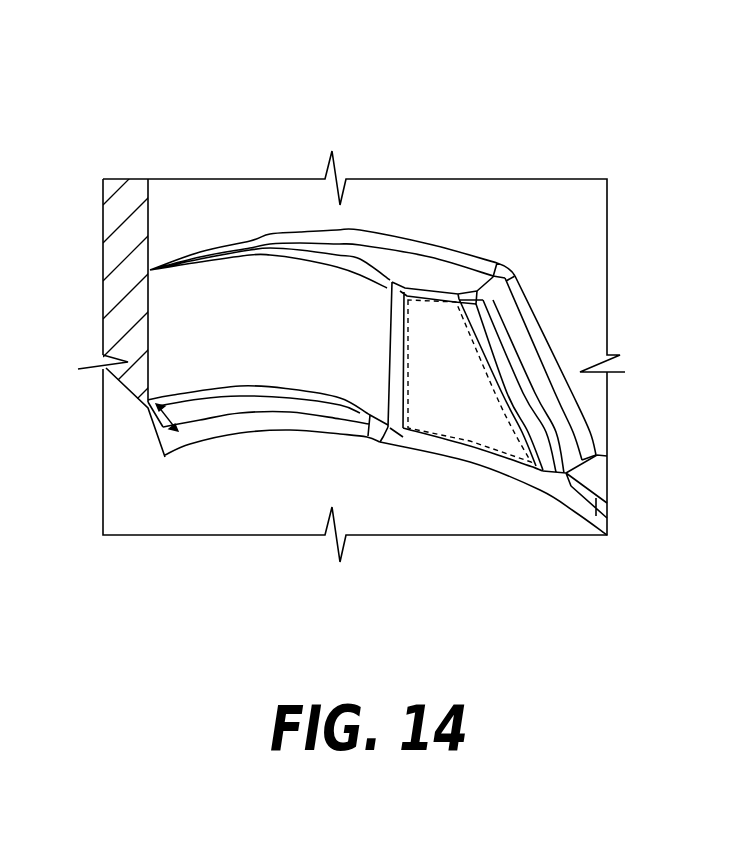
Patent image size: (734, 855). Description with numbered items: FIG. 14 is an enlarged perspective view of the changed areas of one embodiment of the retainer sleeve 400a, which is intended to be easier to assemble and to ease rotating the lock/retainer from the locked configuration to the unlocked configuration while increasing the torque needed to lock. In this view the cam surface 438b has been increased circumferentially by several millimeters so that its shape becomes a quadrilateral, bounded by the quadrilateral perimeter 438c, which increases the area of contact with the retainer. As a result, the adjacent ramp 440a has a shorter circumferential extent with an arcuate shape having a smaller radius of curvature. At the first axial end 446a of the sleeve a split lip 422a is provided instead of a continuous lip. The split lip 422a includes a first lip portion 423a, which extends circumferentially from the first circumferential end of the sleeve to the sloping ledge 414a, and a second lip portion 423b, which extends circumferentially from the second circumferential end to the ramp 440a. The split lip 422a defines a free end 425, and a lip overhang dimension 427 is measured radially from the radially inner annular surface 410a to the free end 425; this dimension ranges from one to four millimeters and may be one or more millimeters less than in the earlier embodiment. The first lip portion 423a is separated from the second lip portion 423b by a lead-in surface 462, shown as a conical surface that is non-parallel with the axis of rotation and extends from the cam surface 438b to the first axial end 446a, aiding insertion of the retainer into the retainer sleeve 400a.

The retainer sleeve 400a is at (568, 171).
The radially inner annular surface 410a is at (552, 231).
The sloping ledge 414a is at (525, 351).
The split lip 422a is at (576, 516).
The first lip portion 423a is at (592, 483).
The second lip portion 423b is at (203, 412).
The free end 425 is at (195, 445).
The lip overhang dimension 427 is at (154, 419).
The cam surface 438b is at (450, 421).
The quadrilateral perimeter 438c is at (392, 350).
The ramp 440a is at (266, 355).
The first axial end 446a is at (413, 448).
The lead-in surface 462 is at (497, 468).